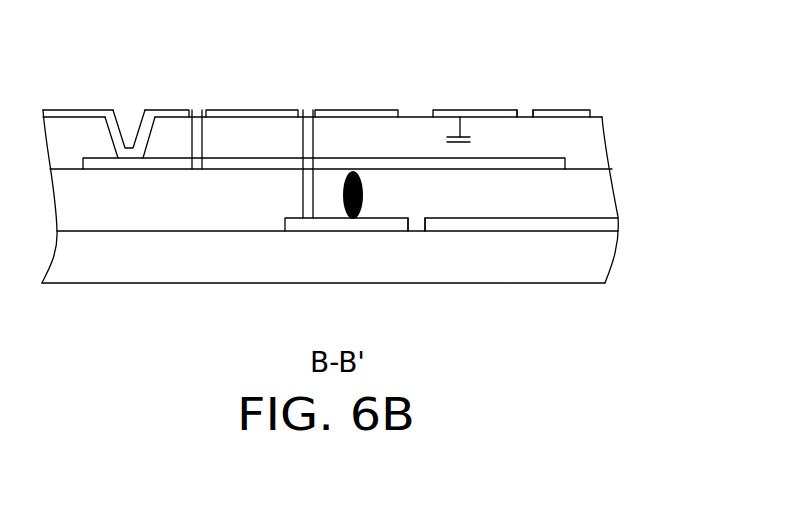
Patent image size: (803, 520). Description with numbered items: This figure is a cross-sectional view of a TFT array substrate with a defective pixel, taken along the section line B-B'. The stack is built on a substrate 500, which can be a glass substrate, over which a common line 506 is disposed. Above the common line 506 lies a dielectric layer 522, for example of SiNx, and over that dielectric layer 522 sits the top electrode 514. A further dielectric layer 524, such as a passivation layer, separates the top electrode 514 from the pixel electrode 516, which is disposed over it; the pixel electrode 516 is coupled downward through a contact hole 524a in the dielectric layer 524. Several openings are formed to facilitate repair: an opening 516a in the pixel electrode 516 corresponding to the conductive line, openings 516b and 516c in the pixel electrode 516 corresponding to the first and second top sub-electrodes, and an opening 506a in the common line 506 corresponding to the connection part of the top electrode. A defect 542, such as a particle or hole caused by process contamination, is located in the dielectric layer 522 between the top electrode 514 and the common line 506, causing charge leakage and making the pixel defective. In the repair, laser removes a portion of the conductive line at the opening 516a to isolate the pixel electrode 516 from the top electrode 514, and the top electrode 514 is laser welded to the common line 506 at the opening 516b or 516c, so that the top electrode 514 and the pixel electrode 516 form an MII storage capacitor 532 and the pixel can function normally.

The substrate 500 is at (587, 276).
The common line 506 is at (610, 224).
The opening 506a is at (417, 232).
The top electrode 514 is at (567, 164).
The pixel electrode 516 is at (572, 113).
The opening 516a is at (197, 108).
The opening 516b is at (306, 108).
The opening 516c is at (524, 108).
The dielectric layer 522 is at (597, 207).
The dielectric layer 524 is at (591, 140).
The contact hole 524a is at (110, 131).
The MII storage capacitor 532 is at (460, 142).
The defect 542 is at (343, 206).